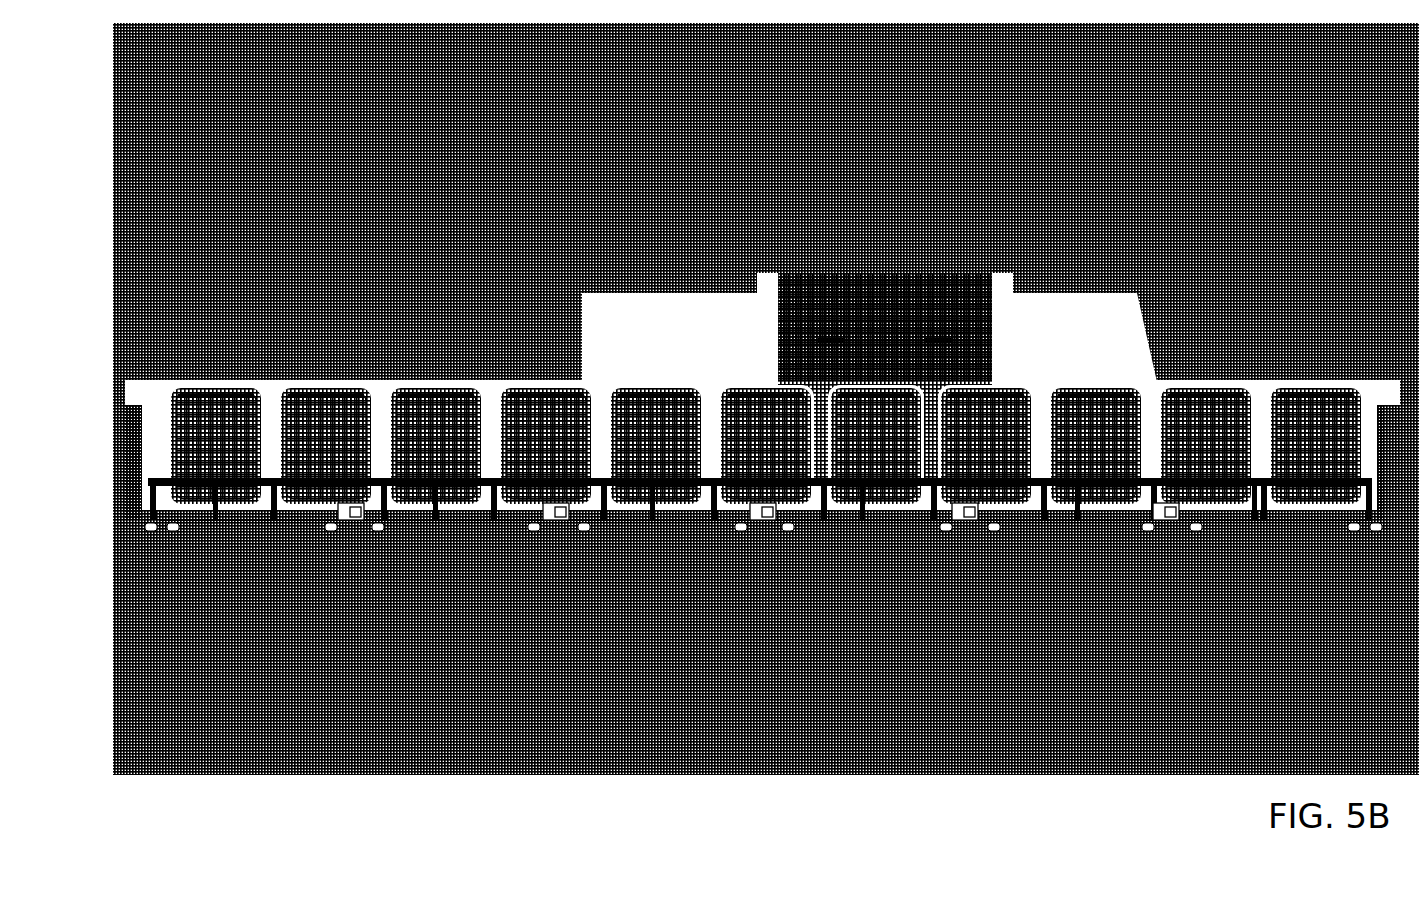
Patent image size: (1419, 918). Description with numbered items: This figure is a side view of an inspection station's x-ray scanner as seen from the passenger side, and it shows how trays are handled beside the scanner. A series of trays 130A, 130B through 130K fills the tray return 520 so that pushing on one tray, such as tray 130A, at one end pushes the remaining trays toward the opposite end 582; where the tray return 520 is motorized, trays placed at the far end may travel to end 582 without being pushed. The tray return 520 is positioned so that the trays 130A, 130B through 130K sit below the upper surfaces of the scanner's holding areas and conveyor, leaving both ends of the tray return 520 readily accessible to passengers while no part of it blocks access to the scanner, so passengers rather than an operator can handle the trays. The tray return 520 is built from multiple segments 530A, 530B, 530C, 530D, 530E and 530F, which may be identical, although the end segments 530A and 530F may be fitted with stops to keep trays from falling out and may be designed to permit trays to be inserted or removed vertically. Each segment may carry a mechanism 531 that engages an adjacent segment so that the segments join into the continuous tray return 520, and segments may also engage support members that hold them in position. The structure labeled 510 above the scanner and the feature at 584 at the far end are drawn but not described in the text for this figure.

The overhead display structure 510 is at (904, 260).
The tray return 520 is at (147, 483).
The tray 130A is at (200, 390).
The tray 130B is at (308, 390).
The tray 130K is at (1228, 390).
The end segment 530A is at (215, 522).
The segment 530B is at (430, 522).
The segment 530C is at (645, 522).
The segment 530D is at (855, 522).
The segment 530E is at (1070, 522).
The end segment 530F is at (1248, 522).
The mechanism 531 is at (347, 520).
The end 582 is at (150, 515).
The end support 584 is at (1370, 512).